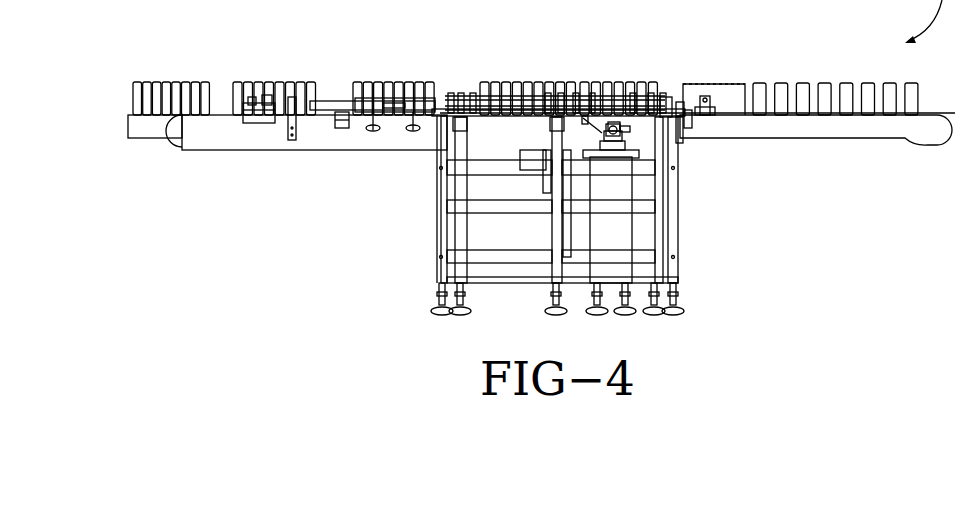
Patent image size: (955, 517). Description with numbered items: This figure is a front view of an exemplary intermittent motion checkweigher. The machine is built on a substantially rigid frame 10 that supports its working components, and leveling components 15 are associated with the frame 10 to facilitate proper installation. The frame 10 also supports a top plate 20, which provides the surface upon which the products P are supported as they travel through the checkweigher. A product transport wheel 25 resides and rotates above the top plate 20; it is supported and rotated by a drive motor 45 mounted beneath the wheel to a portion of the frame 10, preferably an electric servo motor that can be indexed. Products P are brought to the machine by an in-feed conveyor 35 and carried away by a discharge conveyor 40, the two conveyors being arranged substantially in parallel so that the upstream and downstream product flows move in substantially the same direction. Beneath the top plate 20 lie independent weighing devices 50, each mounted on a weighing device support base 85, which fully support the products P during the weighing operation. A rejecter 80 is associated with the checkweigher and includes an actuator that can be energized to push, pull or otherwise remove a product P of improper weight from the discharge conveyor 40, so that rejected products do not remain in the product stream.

The products P is at (172, 92).
The frame 10 is at (426, 250).
The leveling components 15 is at (688, 306).
The top plate 20 is at (632, 113).
The product transport wheel 25 is at (473, 105).
The in-feed conveyor 35 is at (847, 150).
The discharge conveyor 40 is at (228, 153).
The drive motor 45 is at (552, 173).
The weighing devices 50 is at (605, 120).
The rejecter 80 is at (333, 122).
The weighing device support base 85 is at (628, 157).